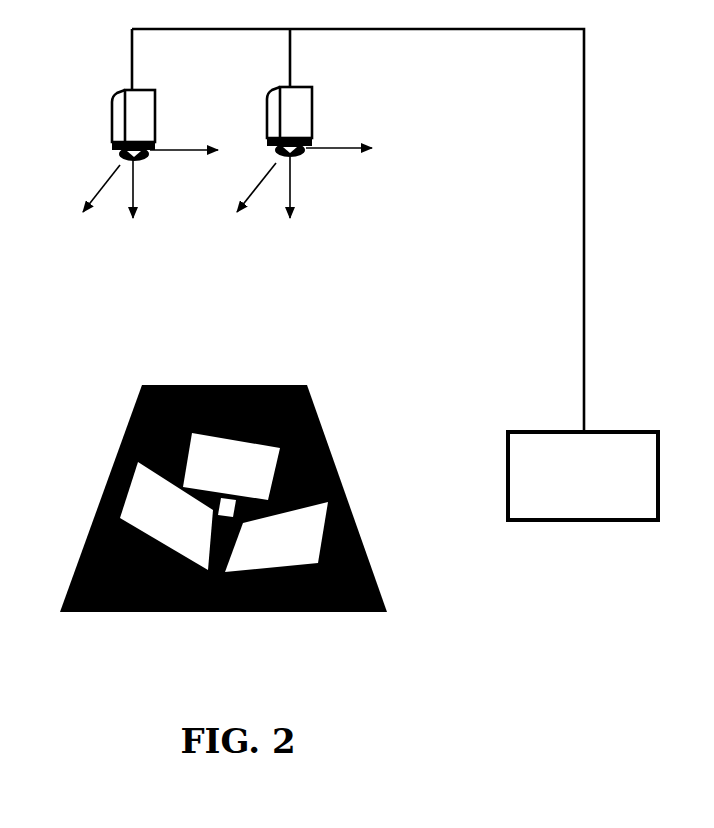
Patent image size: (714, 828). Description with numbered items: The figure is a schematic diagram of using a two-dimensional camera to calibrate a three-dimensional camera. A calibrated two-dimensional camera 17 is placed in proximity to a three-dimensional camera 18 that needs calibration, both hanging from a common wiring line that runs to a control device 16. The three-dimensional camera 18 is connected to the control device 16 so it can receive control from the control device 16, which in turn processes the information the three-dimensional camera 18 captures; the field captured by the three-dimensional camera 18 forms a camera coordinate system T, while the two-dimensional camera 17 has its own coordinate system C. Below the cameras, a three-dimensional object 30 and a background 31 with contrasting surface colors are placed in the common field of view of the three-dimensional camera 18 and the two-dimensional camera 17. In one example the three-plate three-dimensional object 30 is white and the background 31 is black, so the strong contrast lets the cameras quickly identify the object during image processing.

The control device 16 is at (562, 521).
The 2D camera 17 is at (312, 101).
The 3D camera 18 is at (112, 118).
The 3D object 30 is at (224, 502).
The background 31 is at (127, 423).